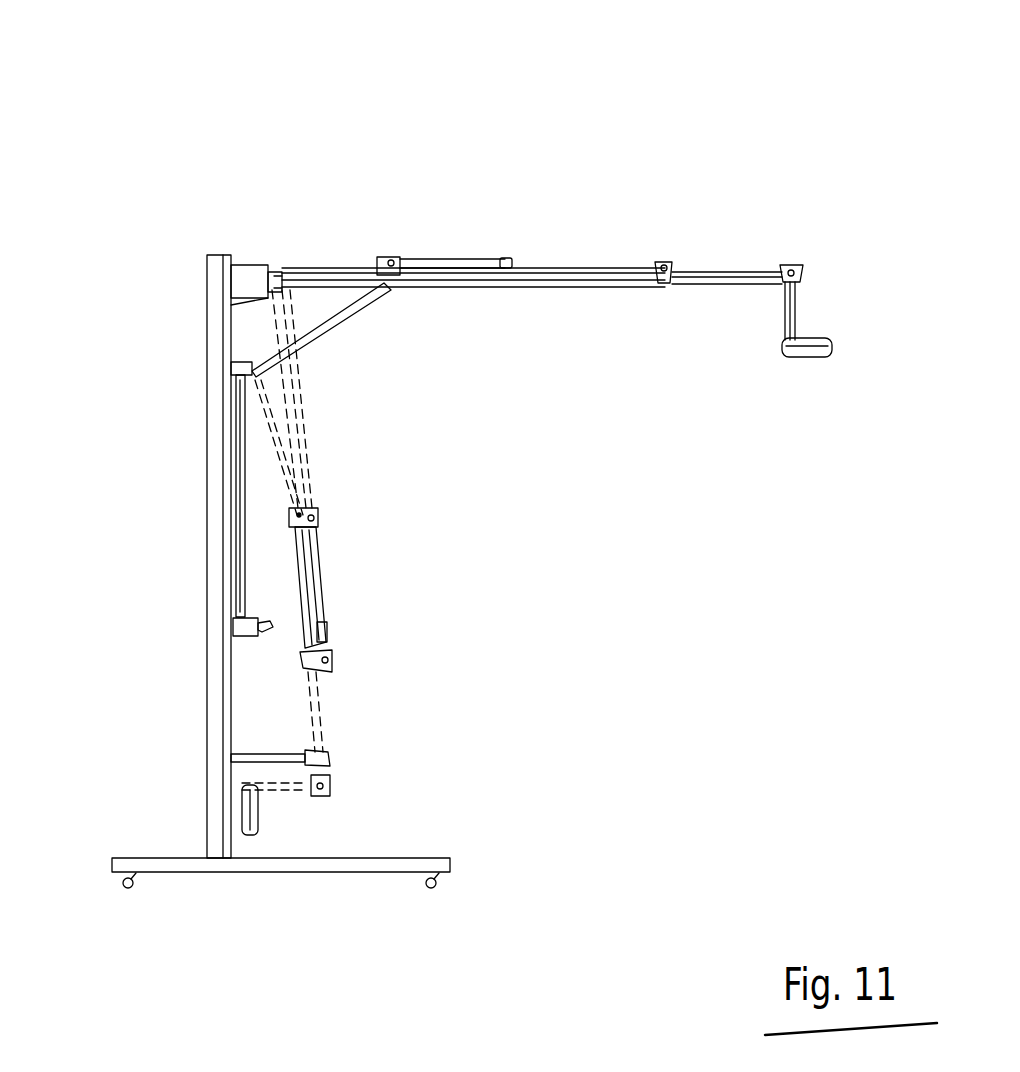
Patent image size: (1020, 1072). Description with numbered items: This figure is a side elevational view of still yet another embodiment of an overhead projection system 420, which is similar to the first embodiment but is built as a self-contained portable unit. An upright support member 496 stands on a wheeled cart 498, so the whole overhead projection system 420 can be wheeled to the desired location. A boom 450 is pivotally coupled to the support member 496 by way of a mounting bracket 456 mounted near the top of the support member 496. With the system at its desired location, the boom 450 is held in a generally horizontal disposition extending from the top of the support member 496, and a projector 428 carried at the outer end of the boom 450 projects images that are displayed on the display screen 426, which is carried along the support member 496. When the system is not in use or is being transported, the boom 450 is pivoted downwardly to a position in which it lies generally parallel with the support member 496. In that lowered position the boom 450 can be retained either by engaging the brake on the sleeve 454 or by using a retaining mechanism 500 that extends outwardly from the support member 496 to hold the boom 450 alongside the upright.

The overhead projection system 420 is at (508, 158).
The display screen 426 is at (240, 528).
The projector 428 is at (815, 356).
The boom 450 is at (648, 232).
The sleeve 454 is at (382, 267).
The mounting bracket 456 is at (245, 277).
The upright support member 496 is at (213, 643).
The wheeled cart 498 is at (382, 846).
The retaining mechanism 500 is at (273, 757).